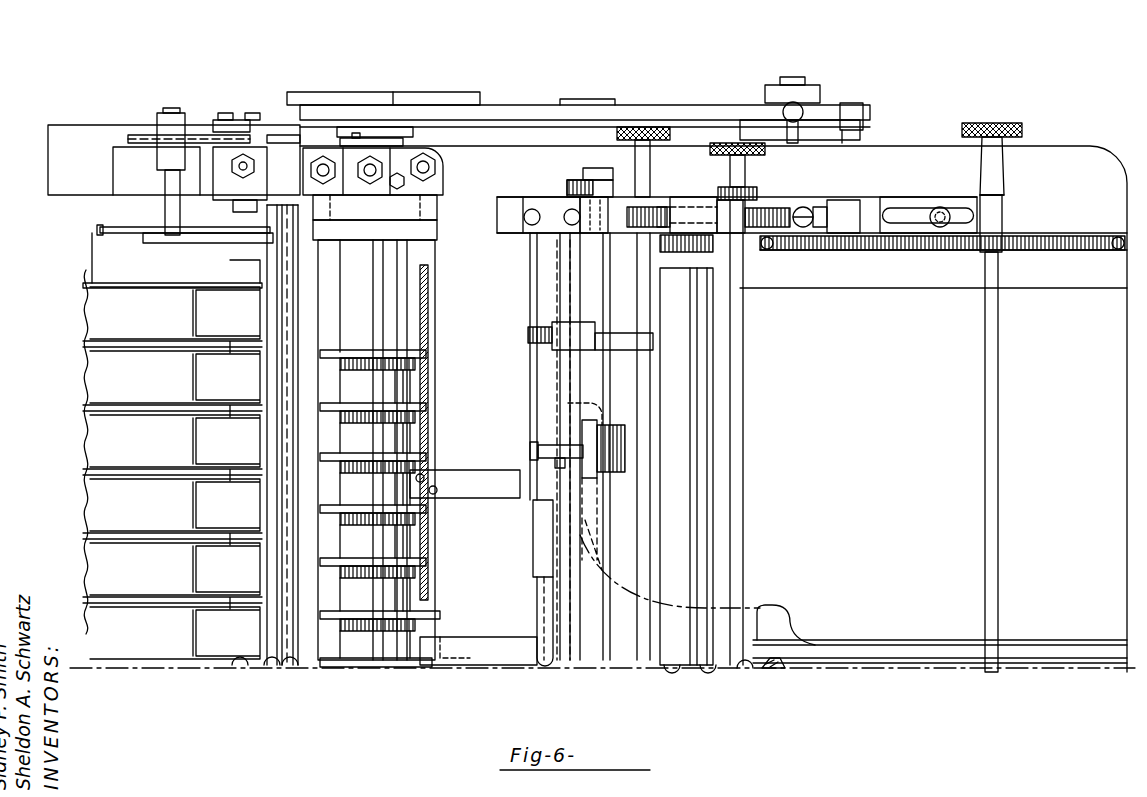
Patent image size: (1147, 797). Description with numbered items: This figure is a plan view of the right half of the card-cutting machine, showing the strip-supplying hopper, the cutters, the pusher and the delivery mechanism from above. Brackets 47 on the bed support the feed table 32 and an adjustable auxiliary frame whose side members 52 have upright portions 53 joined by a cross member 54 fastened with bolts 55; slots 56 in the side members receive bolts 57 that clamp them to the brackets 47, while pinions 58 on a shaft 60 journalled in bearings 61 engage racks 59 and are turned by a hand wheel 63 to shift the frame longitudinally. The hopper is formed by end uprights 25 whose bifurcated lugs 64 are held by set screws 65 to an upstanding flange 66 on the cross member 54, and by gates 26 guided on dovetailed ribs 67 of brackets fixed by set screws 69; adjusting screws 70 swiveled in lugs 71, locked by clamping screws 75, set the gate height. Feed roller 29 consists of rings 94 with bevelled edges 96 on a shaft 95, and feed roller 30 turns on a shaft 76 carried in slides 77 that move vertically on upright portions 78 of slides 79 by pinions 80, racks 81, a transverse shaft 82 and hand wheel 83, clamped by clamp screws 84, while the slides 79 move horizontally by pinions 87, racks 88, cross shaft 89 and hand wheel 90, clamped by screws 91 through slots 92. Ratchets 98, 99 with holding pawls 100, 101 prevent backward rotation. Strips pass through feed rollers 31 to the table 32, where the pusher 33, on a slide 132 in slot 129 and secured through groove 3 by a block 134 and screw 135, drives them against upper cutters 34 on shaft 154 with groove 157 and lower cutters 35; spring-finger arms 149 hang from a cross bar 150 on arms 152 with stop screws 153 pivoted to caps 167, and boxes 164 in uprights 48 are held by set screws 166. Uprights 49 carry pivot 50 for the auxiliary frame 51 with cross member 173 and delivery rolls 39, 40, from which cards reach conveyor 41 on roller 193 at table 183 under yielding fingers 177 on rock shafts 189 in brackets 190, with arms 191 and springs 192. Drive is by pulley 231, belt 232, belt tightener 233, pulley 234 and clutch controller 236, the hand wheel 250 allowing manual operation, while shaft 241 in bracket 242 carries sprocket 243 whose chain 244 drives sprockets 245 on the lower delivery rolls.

The undercut groove 3 is at (1010, 658).
The end uprights 25 is at (647, 346).
The gates 26 is at (590, 420).
The feed roller 29 is at (625, 457).
The feed roller 30 is at (713, 566).
The feed rollers 31 is at (543, 623).
The feed table 32 is at (452, 637).
The pusher 33 is at (565, 410).
The upper rotary cutters 34 is at (365, 615).
The lower rotary cutters 35 is at (425, 615).
The upper delivery rolls 39 is at (270, 667).
The lower delivery rolls 40 is at (293, 670).
The conveyor 41 is at (100, 435).
The brackets 47 is at (1077, 157).
The uprights 48 is at (430, 146).
The uprights 49 is at (233, 197).
The pivot 50 is at (240, 213).
The auxiliary frame 51 is at (290, 228).
The side members 52 is at (893, 228).
The upright portions 53 is at (513, 203).
The cross member 54 is at (552, 288).
The bolts 55 is at (568, 222).
The slots 56 is at (910, 217).
The bolts 57 is at (943, 207).
The pinions 58 is at (1007, 253).
The racks 59 is at (1080, 250).
The shaft 60 is at (992, 417).
The bearings 61 is at (1003, 215).
The hand wheel 63 is at (995, 122).
The bifurcated lugs 64 is at (587, 327).
The set screws 65 is at (530, 335).
The upstanding flange 66 is at (580, 370).
The dovetailed ribs 67 is at (593, 505).
The set screws 69 is at (530, 452).
The adjusting screws 70 is at (557, 462).
The lugs 71 is at (585, 442).
The clamping screws 75 is at (555, 470).
The shaft 76 is at (705, 255).
The slides 77 is at (707, 200).
The upright portions 78 is at (733, 233).
The slides 79 is at (823, 207).
The pinions 80 is at (742, 210).
The racks 81 is at (713, 187).
The transverse shaft 82 is at (743, 388).
The hand wheel 83 is at (717, 145).
The clamp screws 84 is at (743, 213).
The pinions 87 is at (647, 207).
The racks 88 is at (787, 210).
The cross shaft 89 is at (643, 408).
The hand wheel 90 is at (650, 130).
The clamp screws 91 is at (803, 230).
The slots 92 is at (817, 225).
The rings 94 is at (625, 448).
The shaft 95 is at (607, 530).
The bevelled edges 96 is at (615, 430).
The ratchet 98 is at (667, 248).
The ratchet 99 is at (570, 180).
The holding pawl 100 is at (693, 270).
The holding pawl 101 is at (605, 185).
The slot 129 is at (890, 640).
The slide 132 is at (1045, 645).
The foot 134 is at (745, 672).
The screw 135 is at (770, 668).
The arms 149 is at (468, 485).
The cross bar 150 is at (432, 265).
The arms 152 is at (423, 230).
The stop screws 153 is at (430, 170).
The upper cutter shaft 154 is at (360, 135).
The longitudinal groove 157 is at (427, 380).
The boxes 164 is at (407, 140).
The set screws 166 is at (372, 178).
The caps 167 is at (408, 181).
The cross member 173 is at (312, 667).
The yielding fingers 177 is at (207, 427).
The table 183 is at (92, 255).
The rock shafts 189 is at (262, 452).
The brackets 190 is at (247, 240).
The arms 191 is at (128, 233).
The springs 192 is at (100, 230).
The roller 193 is at (238, 666).
The pulley 231 is at (420, 103).
The belt 232 is at (503, 115).
The belt tightener 233 is at (600, 105).
The pulley 234 is at (830, 103).
The clutch controller 236 is at (793, 108).
The shaft 241 is at (170, 218).
The bracket 242 is at (160, 155).
The sprocket 243 is at (145, 135).
The chain 244 is at (197, 135).
The sprockets 245 is at (293, 128).
The hand wheel 250 is at (385, 72).